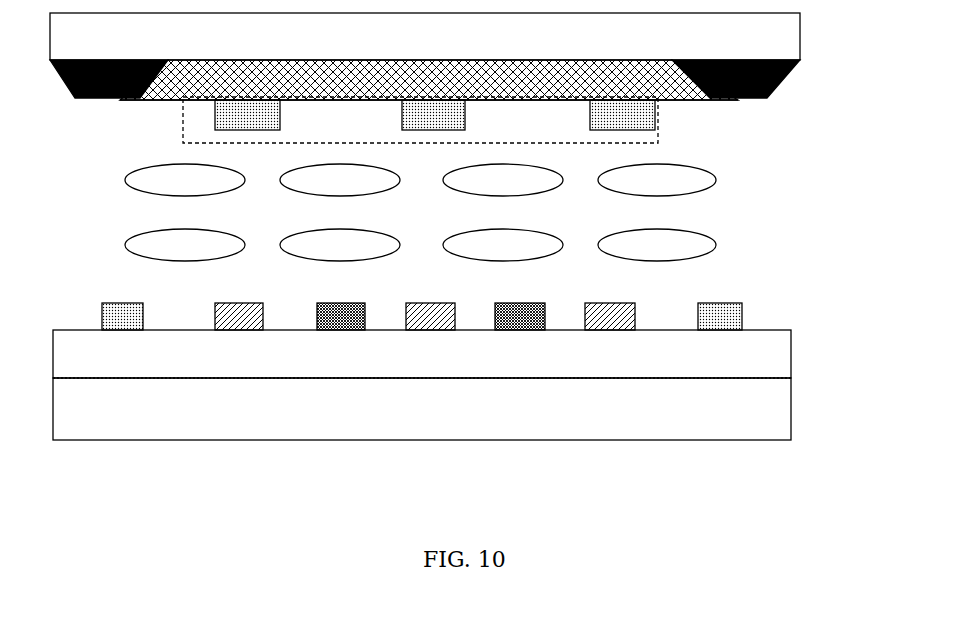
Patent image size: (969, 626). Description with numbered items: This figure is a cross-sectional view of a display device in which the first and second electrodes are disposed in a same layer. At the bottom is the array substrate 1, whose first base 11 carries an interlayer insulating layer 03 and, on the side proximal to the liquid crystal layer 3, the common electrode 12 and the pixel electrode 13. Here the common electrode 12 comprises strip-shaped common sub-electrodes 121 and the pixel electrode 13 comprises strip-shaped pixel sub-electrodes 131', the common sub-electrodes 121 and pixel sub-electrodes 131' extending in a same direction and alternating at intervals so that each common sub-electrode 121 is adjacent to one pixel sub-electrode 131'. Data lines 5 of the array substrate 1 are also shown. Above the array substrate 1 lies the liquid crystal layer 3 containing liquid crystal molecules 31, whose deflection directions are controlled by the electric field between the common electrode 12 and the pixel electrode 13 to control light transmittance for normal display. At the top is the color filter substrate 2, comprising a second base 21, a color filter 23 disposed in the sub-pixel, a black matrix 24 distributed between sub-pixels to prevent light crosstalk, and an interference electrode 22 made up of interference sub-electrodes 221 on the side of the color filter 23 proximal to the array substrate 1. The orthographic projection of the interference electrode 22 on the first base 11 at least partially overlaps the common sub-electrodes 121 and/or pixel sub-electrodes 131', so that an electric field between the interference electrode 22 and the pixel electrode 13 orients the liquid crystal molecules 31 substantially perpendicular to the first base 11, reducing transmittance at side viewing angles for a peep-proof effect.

The array substrate 1 is at (870, 302).
The first base 11 is at (762, 415).
The interlayer insulating layer 03 is at (765, 360).
The common electrode 12 is at (520, 316).
The common sub-electrode 121 is at (346, 305).
The pixel electrode 13 is at (335, 316).
The pixel sub-electrode 131' is at (630, 302).
The data line 5 is at (122, 318).
The liquid crystal layer 3 is at (807, 140).
The liquid crystal molecules 31 is at (685, 185).
The color filter substrate 2 is at (867, 22).
The second base 21 is at (777, 33).
The interference electrode 22 is at (660, 121).
The interference sub-electrode 221 is at (230, 112).
The color filter 23 is at (475, 80).
The black matrix 24 is at (775, 85).